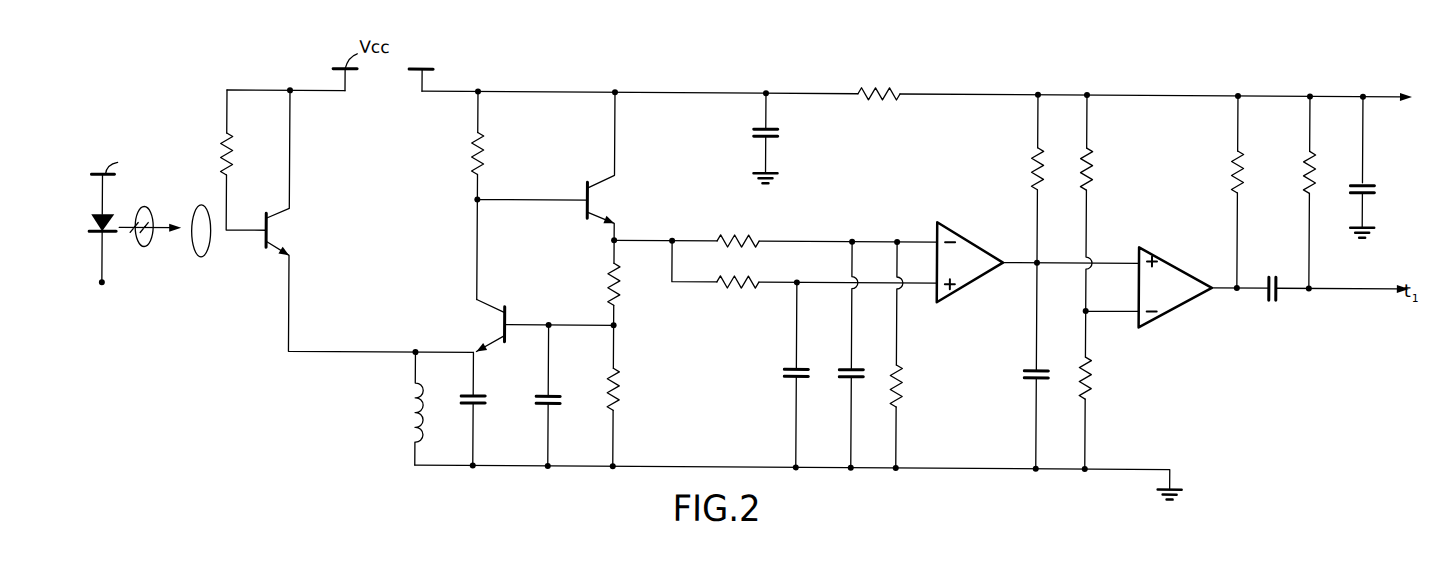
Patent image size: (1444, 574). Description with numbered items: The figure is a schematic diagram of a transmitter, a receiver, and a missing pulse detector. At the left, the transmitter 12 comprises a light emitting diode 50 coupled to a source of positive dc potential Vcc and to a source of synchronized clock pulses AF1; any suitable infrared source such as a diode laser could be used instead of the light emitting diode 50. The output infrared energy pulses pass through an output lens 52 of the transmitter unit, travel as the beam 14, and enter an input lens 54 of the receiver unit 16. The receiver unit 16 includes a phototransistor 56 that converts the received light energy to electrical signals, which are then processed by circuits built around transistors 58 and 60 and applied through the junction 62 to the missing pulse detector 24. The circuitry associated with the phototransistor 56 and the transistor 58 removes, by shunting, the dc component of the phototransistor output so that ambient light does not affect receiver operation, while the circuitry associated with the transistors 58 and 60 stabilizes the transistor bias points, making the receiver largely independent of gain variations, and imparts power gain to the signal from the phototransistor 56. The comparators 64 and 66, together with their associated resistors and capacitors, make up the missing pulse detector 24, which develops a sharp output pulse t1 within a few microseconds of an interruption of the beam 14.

The transmitter 12 is at (86, 154).
The beam 14 is at (175, 234).
The receiver unit 16 is at (624, 192).
The missing pulse detector 24 is at (770, 309).
The light emitting diode 50 is at (92, 219).
The output lens 52 is at (153, 211).
The input lens 54 is at (210, 252).
The phototransistor 56 is at (285, 232).
The transistor 58 is at (508, 309).
The transistor 60 is at (586, 188).
The junction 62 is at (673, 238).
The comparator 64 is at (988, 226).
The comparator 66 is at (1169, 309).